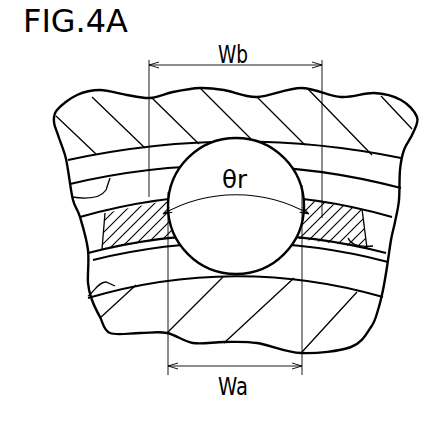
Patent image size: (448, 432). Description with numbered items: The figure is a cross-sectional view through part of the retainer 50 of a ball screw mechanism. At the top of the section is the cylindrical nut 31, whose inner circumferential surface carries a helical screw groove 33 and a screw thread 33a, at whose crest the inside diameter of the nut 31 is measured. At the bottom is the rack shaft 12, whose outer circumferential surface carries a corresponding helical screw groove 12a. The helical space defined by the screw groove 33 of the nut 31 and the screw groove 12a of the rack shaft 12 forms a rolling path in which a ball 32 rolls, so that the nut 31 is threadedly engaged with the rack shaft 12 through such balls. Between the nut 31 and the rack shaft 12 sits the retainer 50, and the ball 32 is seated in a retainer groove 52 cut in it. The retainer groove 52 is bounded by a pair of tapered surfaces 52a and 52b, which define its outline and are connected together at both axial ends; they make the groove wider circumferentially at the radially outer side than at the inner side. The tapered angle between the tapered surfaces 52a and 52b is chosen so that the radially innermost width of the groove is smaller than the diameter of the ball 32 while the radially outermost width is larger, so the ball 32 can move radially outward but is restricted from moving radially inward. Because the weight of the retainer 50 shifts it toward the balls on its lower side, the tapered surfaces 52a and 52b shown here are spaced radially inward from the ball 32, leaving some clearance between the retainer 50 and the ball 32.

The rack shaft 12 is at (116, 337).
The helical screw groove 12a is at (88, 296).
The cylindrical nut 31 is at (392, 99).
The balls 32 is at (315, 268).
The helical screw groove 33 is at (390, 158).
The screw thread 33a is at (72, 197).
The retainer 50 is at (274, 247).
The retainer groove 52 is at (233, 158).
The tapered surface 52a is at (320, 214).
The tapered surface 52b is at (162, 205).